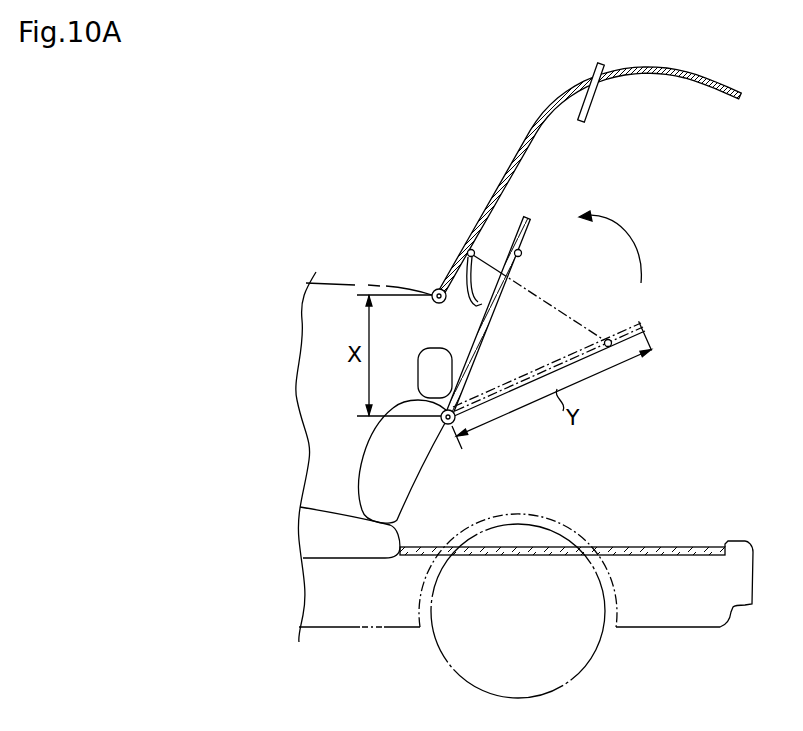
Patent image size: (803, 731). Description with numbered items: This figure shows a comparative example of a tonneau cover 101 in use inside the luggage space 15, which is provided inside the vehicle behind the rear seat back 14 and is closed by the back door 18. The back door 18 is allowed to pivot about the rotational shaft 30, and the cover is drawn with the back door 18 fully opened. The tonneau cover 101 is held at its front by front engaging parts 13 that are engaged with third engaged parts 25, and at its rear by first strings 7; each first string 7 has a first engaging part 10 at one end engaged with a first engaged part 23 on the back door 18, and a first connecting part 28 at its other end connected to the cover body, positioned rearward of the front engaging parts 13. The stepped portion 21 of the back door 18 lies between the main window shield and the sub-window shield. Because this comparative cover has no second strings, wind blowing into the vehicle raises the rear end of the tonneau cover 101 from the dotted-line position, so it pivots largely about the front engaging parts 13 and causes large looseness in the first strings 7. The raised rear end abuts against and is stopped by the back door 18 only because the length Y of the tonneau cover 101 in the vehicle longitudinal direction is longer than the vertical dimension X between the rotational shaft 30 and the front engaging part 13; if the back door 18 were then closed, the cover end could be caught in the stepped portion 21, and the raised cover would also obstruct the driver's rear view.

The first strings 7 is at (477, 303).
The first engaging parts 10 is at (444, 227).
The front engaging parts 13 is at (482, 445).
The rear seat back 14 is at (400, 488).
The luggage space 15 is at (598, 481).
The back door 18 is at (553, 118).
The stepped portion 21 is at (573, 119).
The first engaged parts 23 is at (468, 250).
The third engaged parts 25 is at (450, 427).
The first connecting parts 28 is at (522, 252).
The rotational shaft 30 is at (437, 288).
The tonneau cover 101 is at (490, 327).